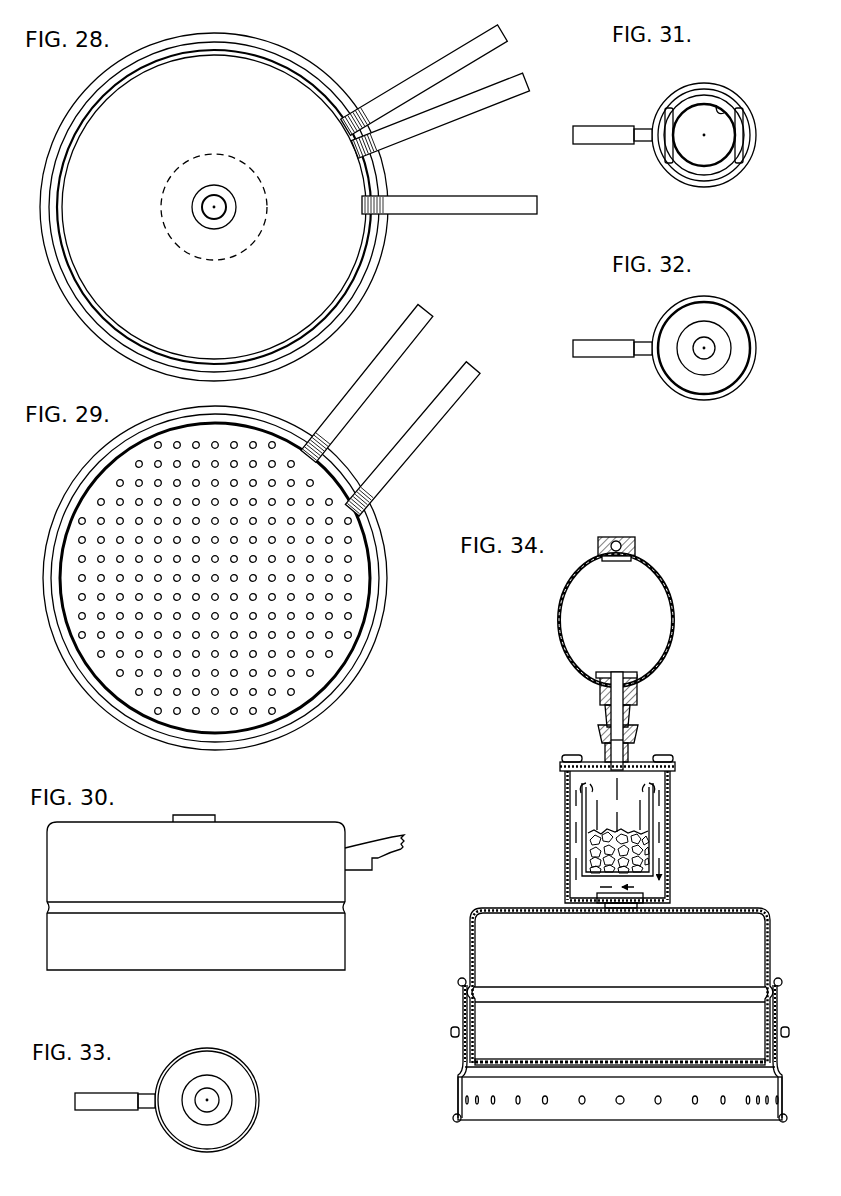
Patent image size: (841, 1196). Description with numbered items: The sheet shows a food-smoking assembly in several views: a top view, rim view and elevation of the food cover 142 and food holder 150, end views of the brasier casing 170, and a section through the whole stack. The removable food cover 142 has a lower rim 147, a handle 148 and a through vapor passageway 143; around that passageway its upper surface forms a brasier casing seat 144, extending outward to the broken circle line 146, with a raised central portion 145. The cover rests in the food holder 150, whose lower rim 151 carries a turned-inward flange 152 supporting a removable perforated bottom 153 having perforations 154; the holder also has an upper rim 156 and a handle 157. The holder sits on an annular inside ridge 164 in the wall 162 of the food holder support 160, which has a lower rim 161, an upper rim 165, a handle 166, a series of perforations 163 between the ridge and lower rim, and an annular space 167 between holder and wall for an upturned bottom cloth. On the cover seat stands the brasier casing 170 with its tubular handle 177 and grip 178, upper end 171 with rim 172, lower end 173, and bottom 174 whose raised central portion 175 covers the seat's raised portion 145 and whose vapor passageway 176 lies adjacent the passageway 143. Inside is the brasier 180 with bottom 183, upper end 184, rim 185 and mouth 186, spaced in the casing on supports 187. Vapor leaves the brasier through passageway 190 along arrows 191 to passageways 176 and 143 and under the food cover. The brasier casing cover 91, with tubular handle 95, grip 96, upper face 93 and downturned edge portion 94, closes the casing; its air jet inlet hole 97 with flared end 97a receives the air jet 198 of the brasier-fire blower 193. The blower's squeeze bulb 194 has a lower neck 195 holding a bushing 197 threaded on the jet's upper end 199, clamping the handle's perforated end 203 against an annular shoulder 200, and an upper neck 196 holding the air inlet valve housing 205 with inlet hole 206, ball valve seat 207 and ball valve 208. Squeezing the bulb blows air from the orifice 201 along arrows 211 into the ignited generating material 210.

In FIG. 34, the brasier casing cover 91 is at (672, 766).
In FIG. 34, the upper face 93 is at (638, 740).
In FIG. 34, the downturned edge portion 94 is at (672, 773).
In FIG. 34, the tubular handle 95 is at (606, 752).
In FIG. 34, the grip 96 is at (600, 731).
In FIG. 34, the air jet inlet hole 97 is at (640, 727).
In FIG. 34, the flared outer end 97a is at (635, 704).
In FIG. 28, the food cover 142 is at (100, 118).
In FIG. 30, the food cover 142 is at (313, 822).
In FIG. 34, the food cover 142 is at (493, 905).
In FIG. 28, the vapor passageway 143 is at (192, 207).
In FIG. 34, the vapor passageway 143 is at (612, 910).
In FIG. 28, the brasier casing seat 144 is at (236, 207).
In FIG. 34, the brasier casing seat 144 is at (670, 910).
In FIG. 28, the raised central portion 145 is at (213, 185).
In FIG. 30, the raised central portion 145 is at (217, 811).
In FIG. 34, the raised central portion 145 is at (632, 910).
In FIG. 28, the broken circle line 146 is at (213, 262).
In FIG. 30, the lower rim 147 is at (310, 972).
In FIG. 34, the lower rim 147 is at (763, 1058).
In FIG. 28, the handle 148 is at (480, 194).
In FIG. 30, the handle 148 is at (398, 832).
In FIG. 28, the food holder 150 is at (301, 64).
In FIG. 29, the food holder 150 is at (88, 482).
In FIG. 34, the food holder 150 is at (463, 996).
In FIG. 34, the lower rim 151 is at (458, 1075).
In FIG. 34, the turned-inward flange 152 is at (462, 1090).
In FIG. 29, the perforated bottom 153 is at (333, 645).
In FIG. 34, the perforated bottom 153 is at (537, 1058).
In FIG. 29, the food-holder bottom perforations 154 is at (272, 714).
In FIG. 34, the food-holder bottom perforations 154 is at (620, 1058).
In FIG. 28, the upper rim 156 is at (320, 82).
In FIG. 29, the upper rim 156 is at (372, 602).
In FIG. 34, the upper rim 156 is at (460, 980).
In FIG. 28, the handle 157 is at (470, 118).
In FIG. 29, the handle 157 is at (457, 402).
In FIG. 28, the food holder support 160 is at (75, 316).
In FIG. 29, the food holder support 160 is at (368, 499).
In FIG. 34, the food holder support 160 is at (463, 1050).
In FIG. 34, the lower rim 161 is at (454, 1115).
In FIG. 34, the wall 162 is at (757, 1092).
In FIG. 34, the perforations 163 is at (657, 1104).
In FIG. 34, the annular inside ridge 164 is at (507, 1080).
In FIG. 28, the upper rim 165 is at (385, 233).
In FIG. 29, the upper rim 165 is at (355, 678).
In FIG. 34, the upper rim 165 is at (452, 1032).
In FIG. 28, the handle 166 is at (432, 62).
In FIG. 29, the handle 166 is at (427, 332).
In FIG. 34, the annular space 167 is at (463, 1027).
In FIG. 31, the brasier casing 170 is at (656, 112).
In FIG. 32, the brasier casing 170 is at (727, 300).
In FIG. 33, the brasier casing 170 is at (188, 1048).
In FIG. 34, the brasier casing 170 is at (672, 838).
In FIG. 31, the upper end 171 is at (757, 126).
In FIG. 32, the upper end 171 is at (660, 318).
In FIG. 34, the upper end 171 is at (565, 778).
In FIG. 31, the rim 172 is at (757, 152).
In FIG. 32, the rim 172 is at (745, 387).
In FIG. 34, the rim 172 is at (575, 763).
In FIG. 33, the lower end 173 is at (172, 1130).
In FIG. 34, the lower end 173 is at (597, 905).
In FIG. 32, the bottom 174 is at (668, 366).
In FIG. 33, the bottom 174 is at (245, 1108).
In FIG. 34, the bottom 174 is at (587, 888).
In FIG. 32, the raised central portion 175 is at (704, 375).
In FIG. 33, the raised central portion 175 is at (220, 1118).
In FIG. 34, the raised central portion 175 is at (645, 905).
In FIG. 32, the vapor passageway 176 is at (717, 348).
In FIG. 33, the vapor passageway 176 is at (215, 1095).
In FIG. 34, the vapor passageway 176 is at (643, 897).
In FIG. 31, the tubular handle 177 is at (640, 126).
In FIG. 32, the tubular handle 177 is at (645, 339).
In FIG. 33, the tubular handle 177 is at (145, 1110).
In FIG. 31, the grip 178 is at (598, 146).
In FIG. 32, the grip 178 is at (604, 362).
In FIG. 33, the grip 178 is at (95, 1113).
In FIG. 31, the brasier 180 is at (683, 100).
In FIG. 34, the brasier 180 is at (655, 822).
In FIG. 31, the bottom 183 is at (705, 155).
In FIG. 34, the bottom 183 is at (587, 882).
In FIG. 31, the upper end 184 is at (730, 170).
In FIG. 34, the upper end 184 is at (655, 790).
In FIG. 31, the rim 185 is at (668, 140).
In FIG. 34, the rim 185 is at (580, 790).
In FIG. 31, the mouth 186 is at (716, 105).
In FIG. 31, the supports 187 is at (741, 104).
In FIG. 34, the supports 187 is at (657, 882).
In FIG. 34, the vapor passageway 190 is at (588, 837).
In FIG. 34, the arrows 191 is at (575, 855).
In FIG. 34, the brasier-fire blower 193 is at (560, 602).
In FIG. 34, the squeeze bulb 194 is at (673, 602).
In FIG. 34, the lower neck 195 is at (598, 680).
In FIG. 34, the upper neck 196 is at (638, 550).
In FIG. 34, the bushing 197 is at (606, 675).
In FIG. 34, the air jet 198 is at (605, 716).
In FIG. 34, the upper end 199 is at (626, 675).
In FIG. 34, the annular shoulder 200 is at (637, 692).
In FIG. 34, the air jet orifice 201 is at (600, 700).
In FIG. 34, the perforated end 203 is at (600, 689).
In FIG. 34, the air inlet valve housing 205 is at (603, 540).
In FIG. 34, the air inlet hole 206 is at (616, 540).
In FIG. 34, the ball valve seat 207 is at (633, 545).
In FIG. 34, the ball valve 208 is at (630, 540).
In FIG. 34, the gaseous-condiment generating material 210 is at (590, 830).
In FIG. 34, the arrows 211 is at (620, 788).